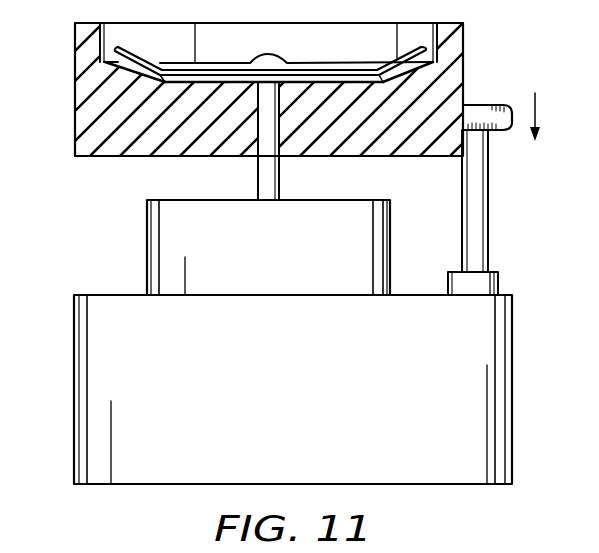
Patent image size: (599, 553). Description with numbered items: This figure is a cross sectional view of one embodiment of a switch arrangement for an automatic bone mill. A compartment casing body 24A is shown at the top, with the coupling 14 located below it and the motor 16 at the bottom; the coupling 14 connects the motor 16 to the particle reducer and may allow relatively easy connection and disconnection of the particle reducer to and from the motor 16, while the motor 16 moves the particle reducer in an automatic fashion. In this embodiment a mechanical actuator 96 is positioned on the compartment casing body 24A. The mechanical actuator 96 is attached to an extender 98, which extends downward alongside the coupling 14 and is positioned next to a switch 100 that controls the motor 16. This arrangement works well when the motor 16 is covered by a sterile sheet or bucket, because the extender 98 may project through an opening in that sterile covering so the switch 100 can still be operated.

The compartment casing body 24A is at (83, 77).
The coupling 14 is at (286, 275).
The motor 16 is at (309, 425).
The mechanical actuator 96 is at (497, 91).
The extender 98 is at (488, 200).
The switch 100 is at (499, 283).